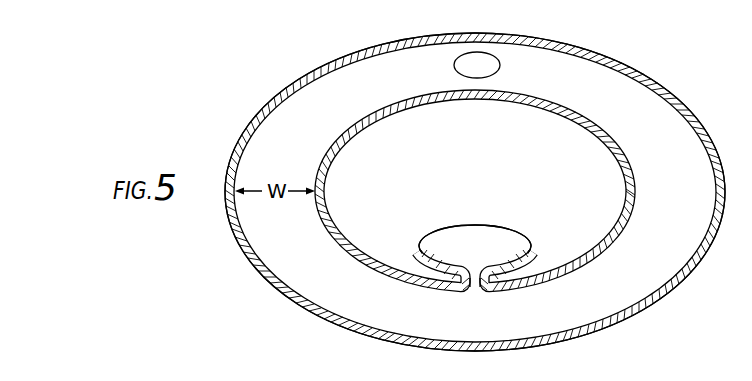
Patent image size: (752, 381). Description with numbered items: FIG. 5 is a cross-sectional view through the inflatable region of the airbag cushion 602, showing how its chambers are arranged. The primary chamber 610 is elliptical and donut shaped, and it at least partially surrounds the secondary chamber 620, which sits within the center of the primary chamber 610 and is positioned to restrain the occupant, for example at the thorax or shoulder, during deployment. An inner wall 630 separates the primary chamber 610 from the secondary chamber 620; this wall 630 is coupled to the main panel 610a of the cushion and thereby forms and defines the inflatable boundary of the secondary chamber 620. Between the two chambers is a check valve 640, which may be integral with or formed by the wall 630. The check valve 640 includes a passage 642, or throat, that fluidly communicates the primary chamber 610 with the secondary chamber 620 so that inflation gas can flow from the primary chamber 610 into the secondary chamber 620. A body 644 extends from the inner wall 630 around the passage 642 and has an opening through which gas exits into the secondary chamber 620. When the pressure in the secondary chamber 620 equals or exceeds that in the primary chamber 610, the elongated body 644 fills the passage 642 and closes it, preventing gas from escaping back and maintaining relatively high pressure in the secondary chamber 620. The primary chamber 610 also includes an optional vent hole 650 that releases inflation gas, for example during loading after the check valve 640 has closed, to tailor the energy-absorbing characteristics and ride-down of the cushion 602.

The airbag cushion 602 is at (197, 127).
The primary chamber 610 is at (309, 256).
The main panel 610a is at (282, 290).
The secondary chamber 620 is at (461, 170).
The inner wall 630 is at (598, 257).
The check valve 640 is at (535, 218).
The passage 642 is at (473, 283).
The body 644 is at (473, 230).
The vent hole 650 is at (478, 60).